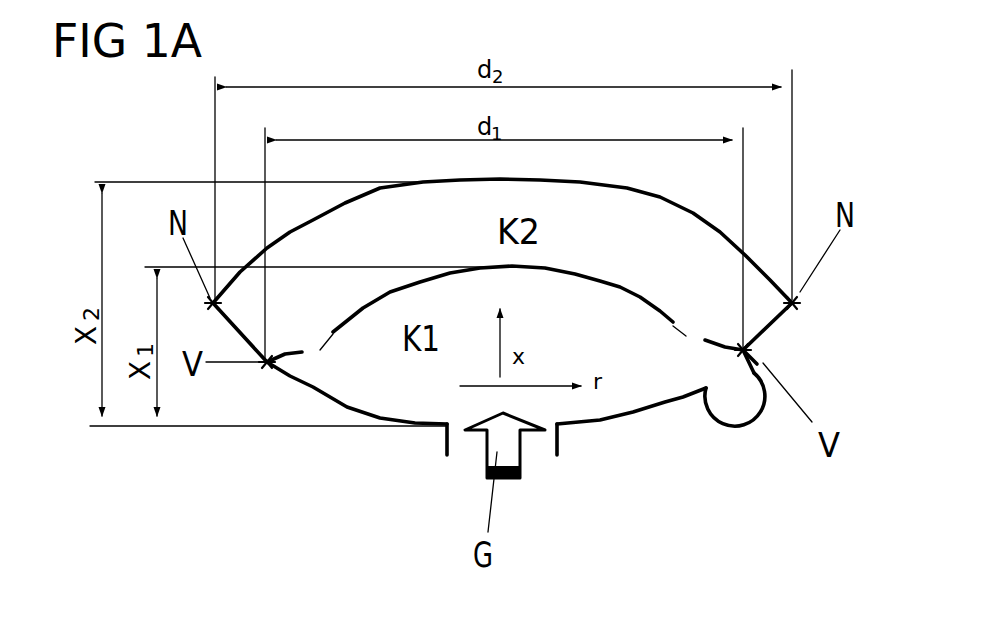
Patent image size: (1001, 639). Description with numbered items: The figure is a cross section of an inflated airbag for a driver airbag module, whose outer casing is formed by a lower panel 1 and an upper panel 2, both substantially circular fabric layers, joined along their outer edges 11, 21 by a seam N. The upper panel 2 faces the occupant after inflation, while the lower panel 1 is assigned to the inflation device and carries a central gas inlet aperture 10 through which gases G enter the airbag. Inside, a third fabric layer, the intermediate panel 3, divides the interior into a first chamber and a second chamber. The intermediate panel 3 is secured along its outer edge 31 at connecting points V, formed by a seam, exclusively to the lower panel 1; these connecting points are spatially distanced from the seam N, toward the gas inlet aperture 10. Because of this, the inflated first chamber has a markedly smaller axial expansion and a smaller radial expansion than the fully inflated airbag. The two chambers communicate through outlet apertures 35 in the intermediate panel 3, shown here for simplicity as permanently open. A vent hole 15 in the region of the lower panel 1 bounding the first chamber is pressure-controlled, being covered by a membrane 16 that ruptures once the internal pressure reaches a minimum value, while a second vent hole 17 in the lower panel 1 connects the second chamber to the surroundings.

The lower panel 1 is at (623, 418).
The upper panel 2 is at (673, 200).
The intermediate panel 3 is at (632, 288).
The gas inlet aperture 10 is at (538, 450).
The outer edge 11 is at (800, 308).
The vent hole 15 is at (723, 373).
The membrane 16 is at (722, 428).
The vent hole 17 is at (773, 340).
The outer edge 21 is at (805, 297).
The outer edge 31 is at (283, 377).
The outlet apertures 35 is at (317, 352).